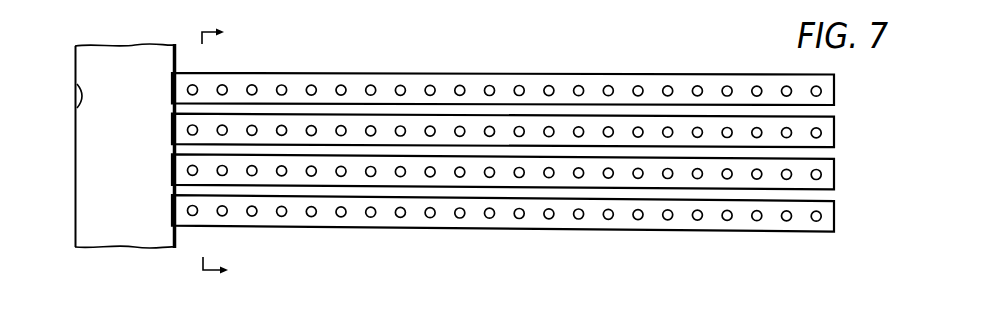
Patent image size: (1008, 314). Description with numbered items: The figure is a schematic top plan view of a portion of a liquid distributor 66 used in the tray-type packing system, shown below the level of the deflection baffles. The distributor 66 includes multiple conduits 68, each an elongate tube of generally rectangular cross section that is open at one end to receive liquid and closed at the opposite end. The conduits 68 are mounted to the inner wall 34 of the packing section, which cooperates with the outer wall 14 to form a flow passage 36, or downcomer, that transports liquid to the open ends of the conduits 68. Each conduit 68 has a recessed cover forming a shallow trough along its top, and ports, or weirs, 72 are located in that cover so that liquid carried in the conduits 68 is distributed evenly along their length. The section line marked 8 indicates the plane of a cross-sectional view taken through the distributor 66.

The outer wall 14 is at (77, 84).
The flow passage 36 is at (117, 228).
The inner wall 34 is at (173, 234).
The liquid distributor 66 is at (447, 68).
The conduit 68 is at (658, 72).
The port 72 is at (524, 213).
The section line 8- 8 is at (223, 151).